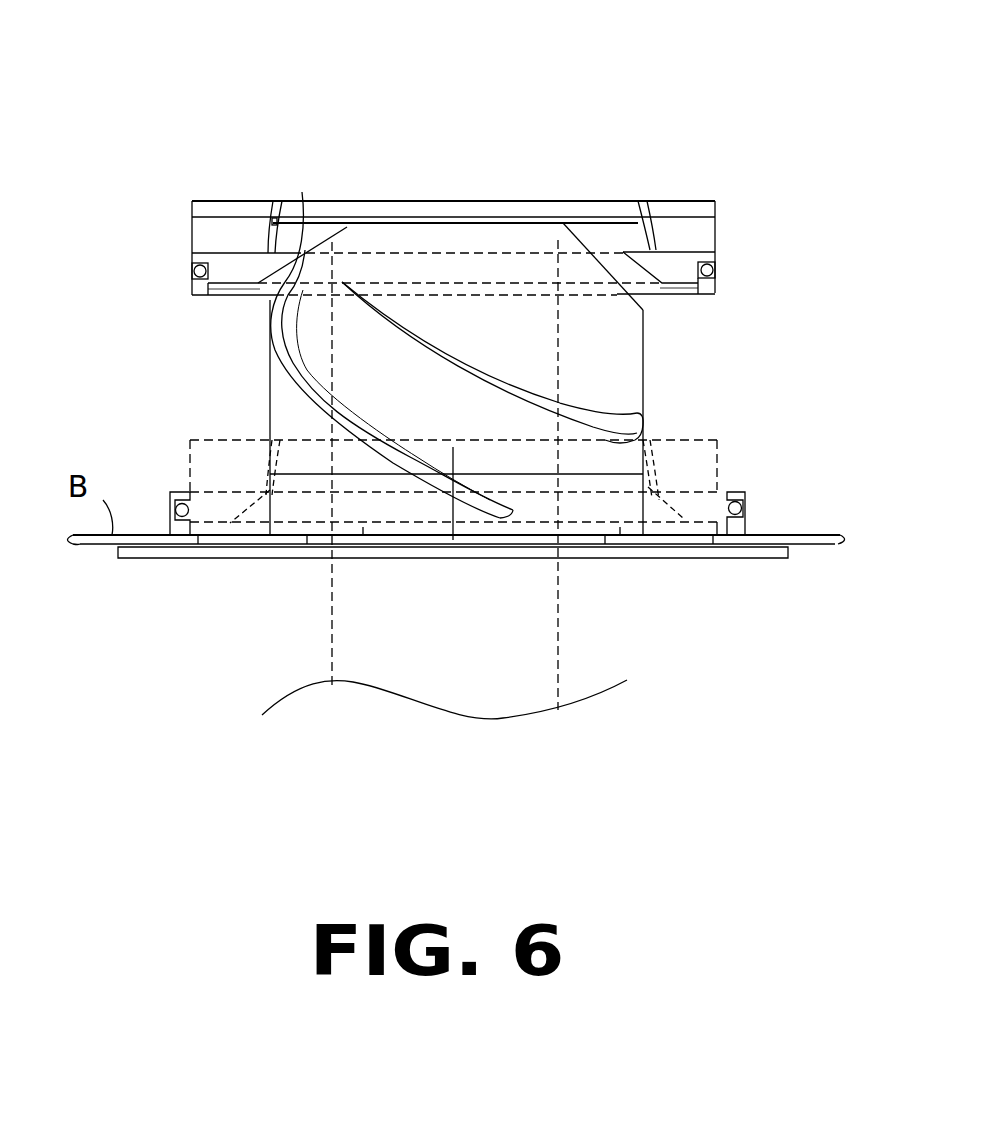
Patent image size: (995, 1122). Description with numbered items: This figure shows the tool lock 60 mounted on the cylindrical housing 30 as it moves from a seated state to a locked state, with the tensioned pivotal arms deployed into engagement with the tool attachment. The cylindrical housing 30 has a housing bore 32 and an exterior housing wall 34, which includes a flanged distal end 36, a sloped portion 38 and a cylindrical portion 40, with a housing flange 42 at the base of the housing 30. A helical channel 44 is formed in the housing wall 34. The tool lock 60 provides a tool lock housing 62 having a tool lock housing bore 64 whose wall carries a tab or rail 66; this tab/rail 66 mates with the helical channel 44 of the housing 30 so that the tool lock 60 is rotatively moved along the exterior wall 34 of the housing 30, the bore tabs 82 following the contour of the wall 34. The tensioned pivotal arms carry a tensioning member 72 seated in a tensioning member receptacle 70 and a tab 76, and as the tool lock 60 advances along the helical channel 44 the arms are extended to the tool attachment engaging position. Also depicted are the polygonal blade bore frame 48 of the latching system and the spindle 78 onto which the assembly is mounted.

The cylindrical housing 30 is at (670, 377).
The housing bore 32 is at (430, 268).
The housing wall 34 is at (645, 337).
The flanged distal end of housing wall 36 is at (467, 220).
The sloped portion of housing wall 38 is at (577, 240).
The cylindrical portion of housing wall 40 is at (270, 385).
The housing flange 42 is at (137, 552).
The helical channel 44 is at (417, 467).
The polygonal blade bore frame 48 is at (222, 540).
The tool lock 60 is at (530, 193).
The tool lock housing 62 is at (378, 199).
The tool lock housing bore 64 is at (307, 247).
The tab/rail of housing bore wall 66 is at (270, 237).
The tensioning member receptacle 70 is at (195, 270).
The tensioning member 72 is at (195, 263).
The tab of tensioned pivotal arm 76 is at (200, 290).
The spindle 78 is at (470, 643).
The bore tabs of tensioned pivotal arm 82 is at (227, 260).